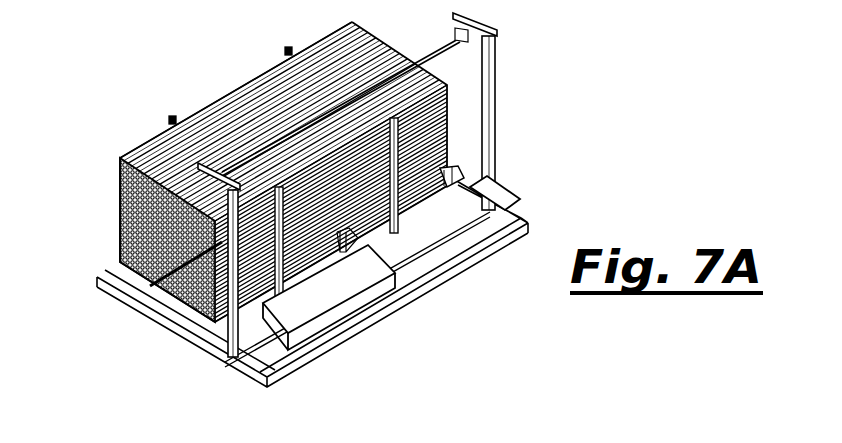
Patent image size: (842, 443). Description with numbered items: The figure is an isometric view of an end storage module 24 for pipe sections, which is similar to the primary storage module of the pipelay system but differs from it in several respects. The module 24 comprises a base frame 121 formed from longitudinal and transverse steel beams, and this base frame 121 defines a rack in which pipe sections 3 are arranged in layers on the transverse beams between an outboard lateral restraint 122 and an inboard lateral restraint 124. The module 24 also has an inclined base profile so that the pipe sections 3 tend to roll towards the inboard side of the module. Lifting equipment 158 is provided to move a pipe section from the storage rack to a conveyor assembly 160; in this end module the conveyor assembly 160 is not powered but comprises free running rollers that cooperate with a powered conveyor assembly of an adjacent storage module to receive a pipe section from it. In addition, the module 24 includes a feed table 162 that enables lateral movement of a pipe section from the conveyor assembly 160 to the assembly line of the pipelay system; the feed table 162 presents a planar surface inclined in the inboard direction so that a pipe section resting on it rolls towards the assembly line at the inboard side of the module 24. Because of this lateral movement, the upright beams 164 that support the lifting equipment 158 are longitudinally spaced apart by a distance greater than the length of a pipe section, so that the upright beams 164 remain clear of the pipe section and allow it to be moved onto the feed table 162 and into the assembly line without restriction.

The end storage module 24 is at (112, 82).
The pipe sections 3 is at (245, 97).
The base frame 121 is at (433, 278).
The outboard lateral restraint 122 is at (168, 122).
The inboard lateral restraint 124 is at (240, 310).
The lifting equipment 158 is at (152, 283).
The conveyor assembly 160 is at (460, 177).
The feed table 162 is at (473, 208).
The upright beams 164 is at (190, 303).